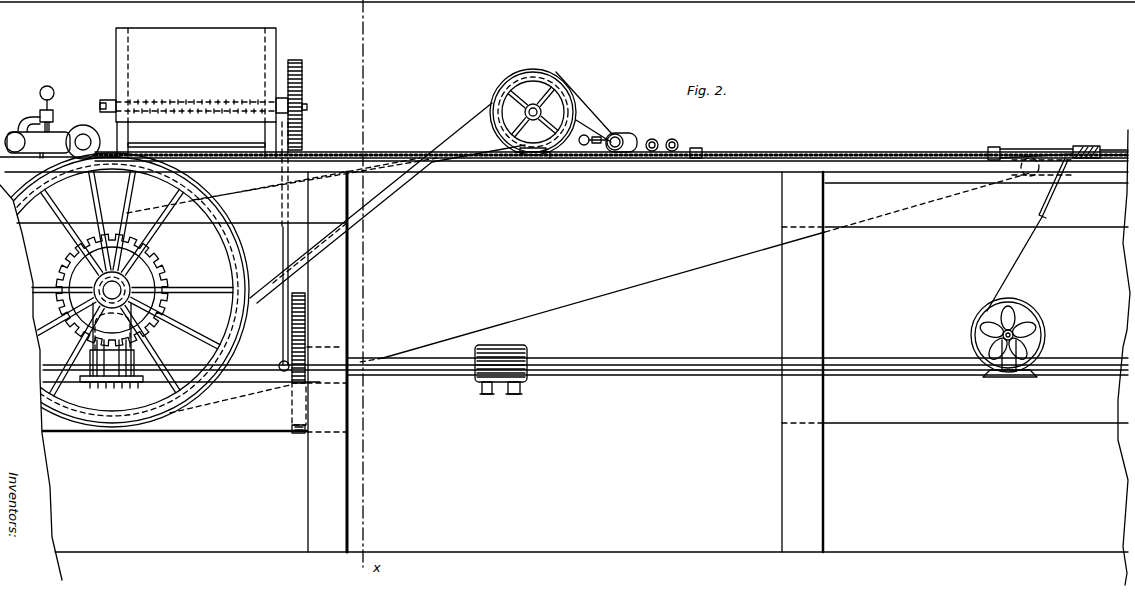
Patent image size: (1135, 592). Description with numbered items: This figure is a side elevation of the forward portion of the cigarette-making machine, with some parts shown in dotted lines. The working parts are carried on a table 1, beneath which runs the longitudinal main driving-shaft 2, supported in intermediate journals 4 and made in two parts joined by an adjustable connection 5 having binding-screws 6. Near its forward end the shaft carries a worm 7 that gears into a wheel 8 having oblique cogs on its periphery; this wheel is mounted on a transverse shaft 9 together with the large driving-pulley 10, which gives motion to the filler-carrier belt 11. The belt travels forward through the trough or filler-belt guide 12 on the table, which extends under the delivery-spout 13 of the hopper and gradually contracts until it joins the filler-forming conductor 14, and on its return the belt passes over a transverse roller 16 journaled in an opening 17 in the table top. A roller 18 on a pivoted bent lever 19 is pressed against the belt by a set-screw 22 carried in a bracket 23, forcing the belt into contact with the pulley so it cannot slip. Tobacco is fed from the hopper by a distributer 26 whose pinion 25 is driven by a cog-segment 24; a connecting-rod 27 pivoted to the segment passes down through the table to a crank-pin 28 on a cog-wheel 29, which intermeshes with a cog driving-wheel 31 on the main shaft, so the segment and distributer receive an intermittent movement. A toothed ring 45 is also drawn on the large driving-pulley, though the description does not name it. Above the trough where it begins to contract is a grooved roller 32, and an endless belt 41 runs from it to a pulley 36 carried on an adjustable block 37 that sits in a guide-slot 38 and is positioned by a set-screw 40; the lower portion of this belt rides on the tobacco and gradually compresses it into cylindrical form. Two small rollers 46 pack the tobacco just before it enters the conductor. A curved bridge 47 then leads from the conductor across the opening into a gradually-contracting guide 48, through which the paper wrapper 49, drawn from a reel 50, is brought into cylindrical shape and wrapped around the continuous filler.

The table 1 is at (605, 172).
The longitudinal main driving-shaft 2 is at (652, 370).
The intermediate journals 4 is at (318, 378).
The adjustable connection 5 is at (511, 357).
The binding-screws 6 is at (486, 391).
The worm 7 is at (113, 385).
The wheel 8 is at (58, 300).
The transverse shaft 9 is at (118, 290).
The large driving-pulley 10 is at (243, 245).
The filler-carrier belt 11 is at (627, 290).
The trough or filler-belt guide 12 is at (312, 153).
The delivery-spout 13 is at (196, 139).
The filler-forming conductor 14 is at (798, 143).
The transverse roller 16 is at (1035, 177).
The opening 17 is at (1063, 150).
The roller 18 is at (103, 135).
The bent lever 19 is at (52, 137).
The set-screw 22 is at (52, 90).
The bracket 23 is at (32, 117).
The cog-segment 24 is at (302, 73).
The pinion 25 is at (307, 107).
The distributer 26 is at (194, 75).
The connecting-rod 27 is at (293, 246).
The crank-pin 28 is at (283, 385).
The cog-wheel 29 is at (309, 348).
The cog driving-wheel 31 is at (306, 306).
The roller 32 is at (572, 77).
The pulley 36 is at (623, 136).
The adjustable block 37 is at (622, 131).
The guide-slot 38 is at (653, 138).
The set-screw 40 is at (592, 132).
The endless belt 41 is at (594, 108).
The gear ring 45 is at (195, 266).
The small rollers 46 is at (675, 141).
The curved bridge 47 is at (1030, 158).
The gradually-contracting guide 48 is at (1046, 198).
The paper wrapper 49 is at (1014, 264).
The reel 50 is at (1040, 318).